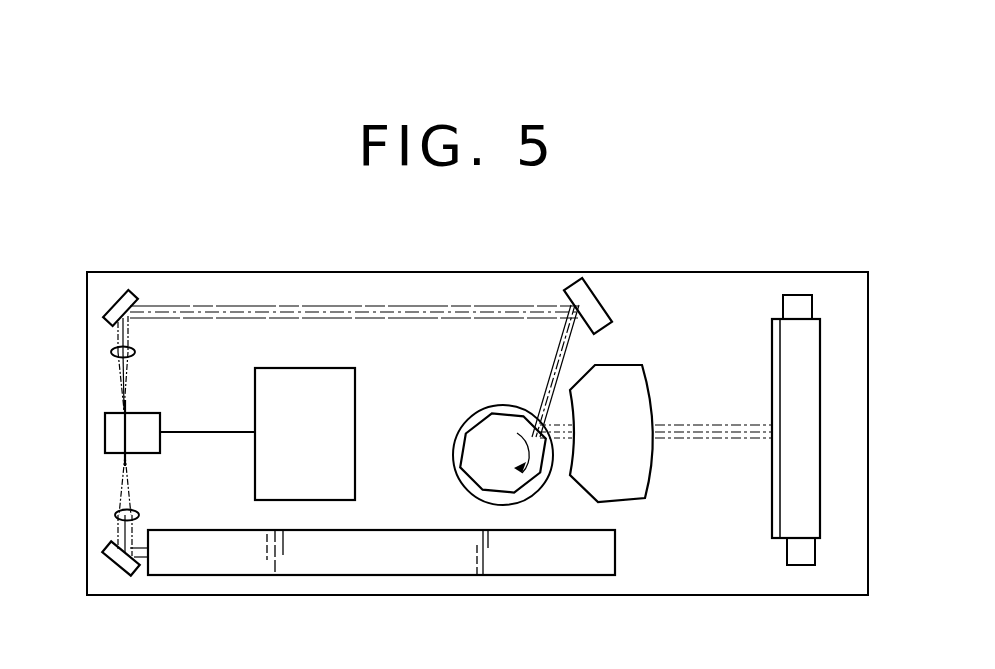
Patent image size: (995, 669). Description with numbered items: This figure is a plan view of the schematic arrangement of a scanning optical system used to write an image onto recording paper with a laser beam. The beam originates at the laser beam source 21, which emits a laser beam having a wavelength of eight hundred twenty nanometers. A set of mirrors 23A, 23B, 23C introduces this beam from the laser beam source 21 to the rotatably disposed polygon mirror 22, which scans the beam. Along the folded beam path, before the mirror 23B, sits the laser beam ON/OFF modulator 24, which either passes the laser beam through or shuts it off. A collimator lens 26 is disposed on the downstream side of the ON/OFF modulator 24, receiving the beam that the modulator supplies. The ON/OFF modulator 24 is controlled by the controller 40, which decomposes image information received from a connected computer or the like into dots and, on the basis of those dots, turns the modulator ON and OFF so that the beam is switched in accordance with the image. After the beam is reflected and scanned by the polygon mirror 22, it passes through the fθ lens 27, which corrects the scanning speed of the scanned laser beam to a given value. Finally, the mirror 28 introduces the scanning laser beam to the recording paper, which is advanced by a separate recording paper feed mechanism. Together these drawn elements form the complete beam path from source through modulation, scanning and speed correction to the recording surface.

The laser beam source 21 is at (430, 568).
The polygon mirror 22 is at (453, 452).
The mirror 23A is at (122, 573).
The mirror 23B is at (123, 292).
The mirror 23C is at (578, 287).
The laser beam ON/OFF modulator 24 is at (105, 432).
The collimator lens 26 is at (134, 353).
The fθ lens 27 is at (643, 400).
The mirror 28 is at (770, 332).
The controller 40 is at (343, 442).